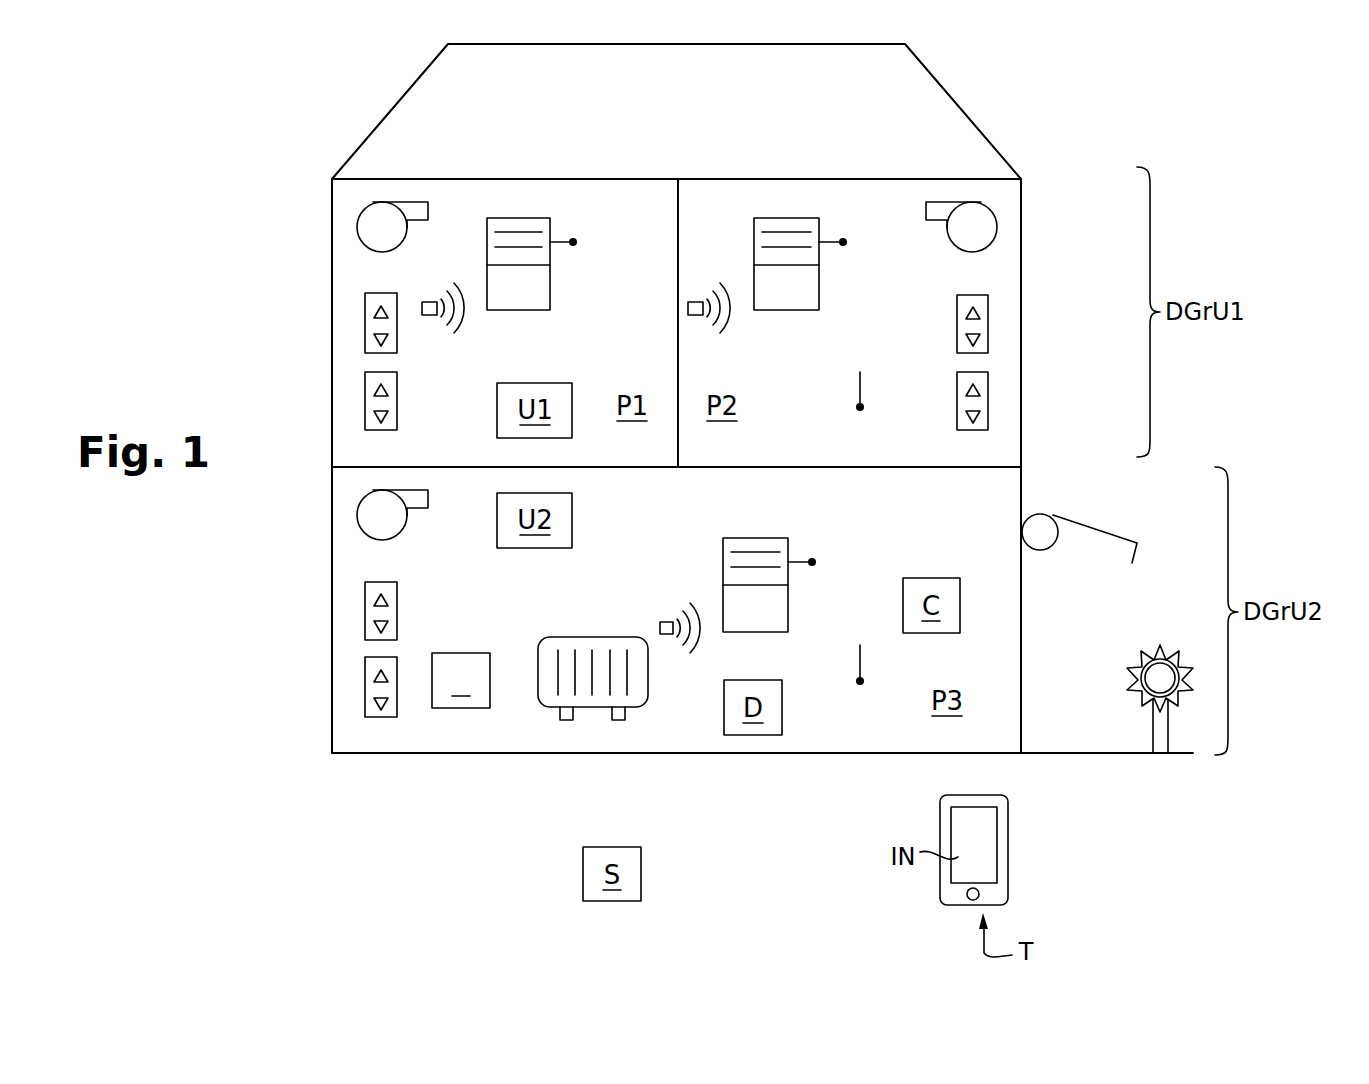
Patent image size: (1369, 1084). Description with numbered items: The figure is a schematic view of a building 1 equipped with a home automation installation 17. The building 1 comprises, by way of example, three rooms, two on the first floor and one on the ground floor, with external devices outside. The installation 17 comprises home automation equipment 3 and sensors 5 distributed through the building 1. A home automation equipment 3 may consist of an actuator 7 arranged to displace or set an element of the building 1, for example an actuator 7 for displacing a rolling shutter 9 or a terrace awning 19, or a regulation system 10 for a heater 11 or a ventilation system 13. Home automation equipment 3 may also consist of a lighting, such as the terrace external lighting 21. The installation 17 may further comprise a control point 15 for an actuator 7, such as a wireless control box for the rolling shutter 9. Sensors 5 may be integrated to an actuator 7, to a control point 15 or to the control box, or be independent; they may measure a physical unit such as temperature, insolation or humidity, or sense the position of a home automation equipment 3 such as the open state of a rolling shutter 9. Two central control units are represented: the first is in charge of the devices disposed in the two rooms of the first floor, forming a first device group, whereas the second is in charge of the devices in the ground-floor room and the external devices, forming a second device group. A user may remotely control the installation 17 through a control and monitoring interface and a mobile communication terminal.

The building 1 is at (963, 110).
The home automation equipment 3 is at (813, 561).
The sensor 5 is at (428, 302).
The actuator 7 is at (577, 243).
The rolling shutter 9 is at (517, 218).
The regulation system 10 is at (365, 392).
The heater 11 is at (595, 637).
The ventilation system 13 is at (364, 228).
The control point 15 is at (460, 653).
The home automation installation 17 is at (762, 398).
The terrace awning 19 is at (1103, 538).
The terrace external lighting 21 is at (1153, 728).